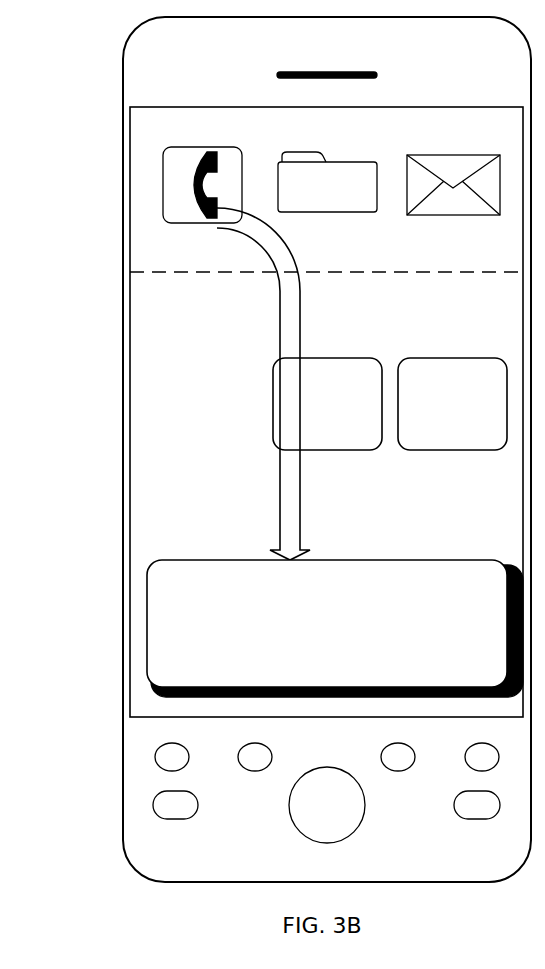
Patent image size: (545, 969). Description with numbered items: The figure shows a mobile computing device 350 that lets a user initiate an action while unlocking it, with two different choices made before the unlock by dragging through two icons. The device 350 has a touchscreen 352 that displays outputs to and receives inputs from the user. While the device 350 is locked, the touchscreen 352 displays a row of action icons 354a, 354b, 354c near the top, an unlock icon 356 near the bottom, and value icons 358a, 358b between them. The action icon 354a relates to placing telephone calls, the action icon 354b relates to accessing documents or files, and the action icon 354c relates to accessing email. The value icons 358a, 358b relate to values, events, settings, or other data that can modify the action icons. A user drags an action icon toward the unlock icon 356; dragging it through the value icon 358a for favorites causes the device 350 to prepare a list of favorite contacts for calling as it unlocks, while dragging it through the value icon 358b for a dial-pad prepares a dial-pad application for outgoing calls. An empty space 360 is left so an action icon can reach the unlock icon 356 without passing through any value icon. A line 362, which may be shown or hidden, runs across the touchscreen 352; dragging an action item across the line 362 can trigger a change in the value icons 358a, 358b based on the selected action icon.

The mobile computing device 350 is at (122, 57).
The touchscreen 352 is at (200, 107).
The action icon 354a is at (185, 147).
The action icon 354b is at (335, 162).
The action icon 354c is at (445, 155).
The unlock icon 356 is at (366, 560).
The value icon 358a is at (312, 358).
The value icon 358b is at (440, 358).
The empty space 360 is at (203, 354).
The line 362 is at (371, 272).